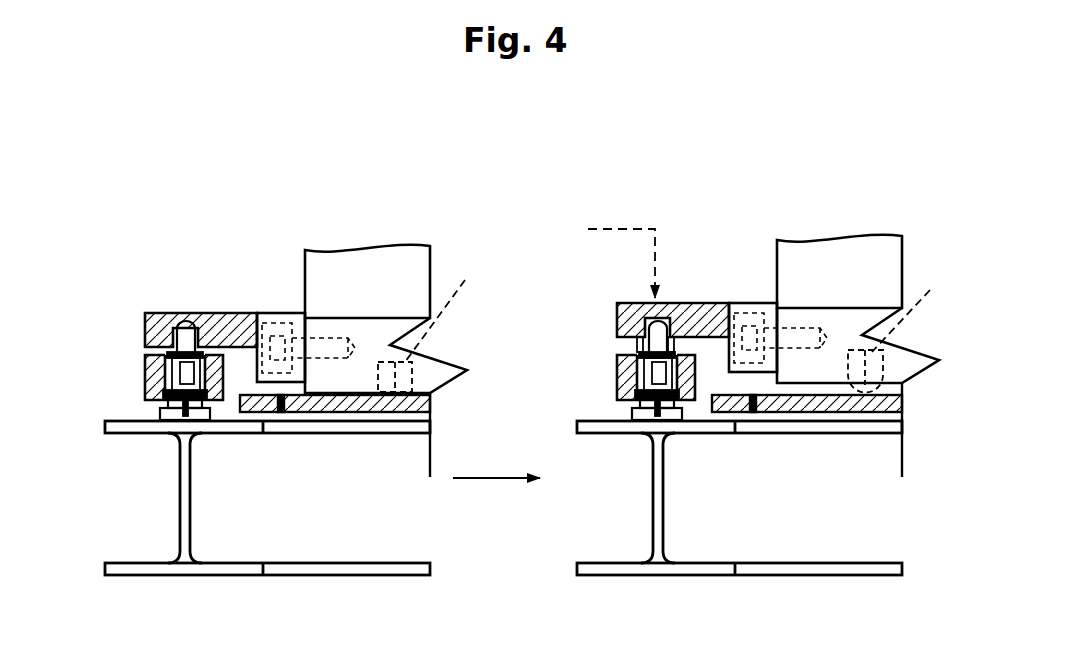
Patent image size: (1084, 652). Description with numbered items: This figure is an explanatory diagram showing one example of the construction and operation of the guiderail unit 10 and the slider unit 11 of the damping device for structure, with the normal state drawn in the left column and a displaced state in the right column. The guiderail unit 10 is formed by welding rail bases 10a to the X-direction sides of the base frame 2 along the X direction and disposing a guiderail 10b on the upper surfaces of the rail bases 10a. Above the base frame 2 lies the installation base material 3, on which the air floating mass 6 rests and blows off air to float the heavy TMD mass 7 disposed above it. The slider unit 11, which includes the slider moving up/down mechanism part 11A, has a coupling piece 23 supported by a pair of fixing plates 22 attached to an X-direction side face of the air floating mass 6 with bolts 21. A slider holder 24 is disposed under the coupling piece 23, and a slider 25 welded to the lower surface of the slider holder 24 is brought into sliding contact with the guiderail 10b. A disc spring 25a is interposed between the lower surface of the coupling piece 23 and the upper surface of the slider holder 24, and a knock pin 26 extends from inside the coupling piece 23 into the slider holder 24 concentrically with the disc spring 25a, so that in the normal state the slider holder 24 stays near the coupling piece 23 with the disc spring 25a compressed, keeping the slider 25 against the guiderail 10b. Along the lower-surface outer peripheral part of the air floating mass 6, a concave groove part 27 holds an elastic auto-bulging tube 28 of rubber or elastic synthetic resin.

The base frame 2 is at (148, 577).
The installation base material 3 is at (352, 412).
The air floating mass 6 is at (443, 357).
The TMD mass 7 is at (407, 272).
The guiderail unit 10 is at (130, 412).
The rail base 10a is at (198, 430).
The guiderail 10b is at (172, 432).
The slider unit 11 is at (122, 333).
The slider moving up/down mechanism part 11A is at (132, 378).
The bolt 21 is at (272, 318).
The fixing plate 22 is at (288, 312).
The coupling piece 23 is at (229, 313).
The slider holder 24 is at (143, 363).
The slider 25 is at (163, 407).
The disc spring 25a is at (635, 347).
The knock pin 26 is at (186, 320).
The concave groove part 27 is at (683, 305).
The elastic auto-bulging tube 28 is at (398, 393).